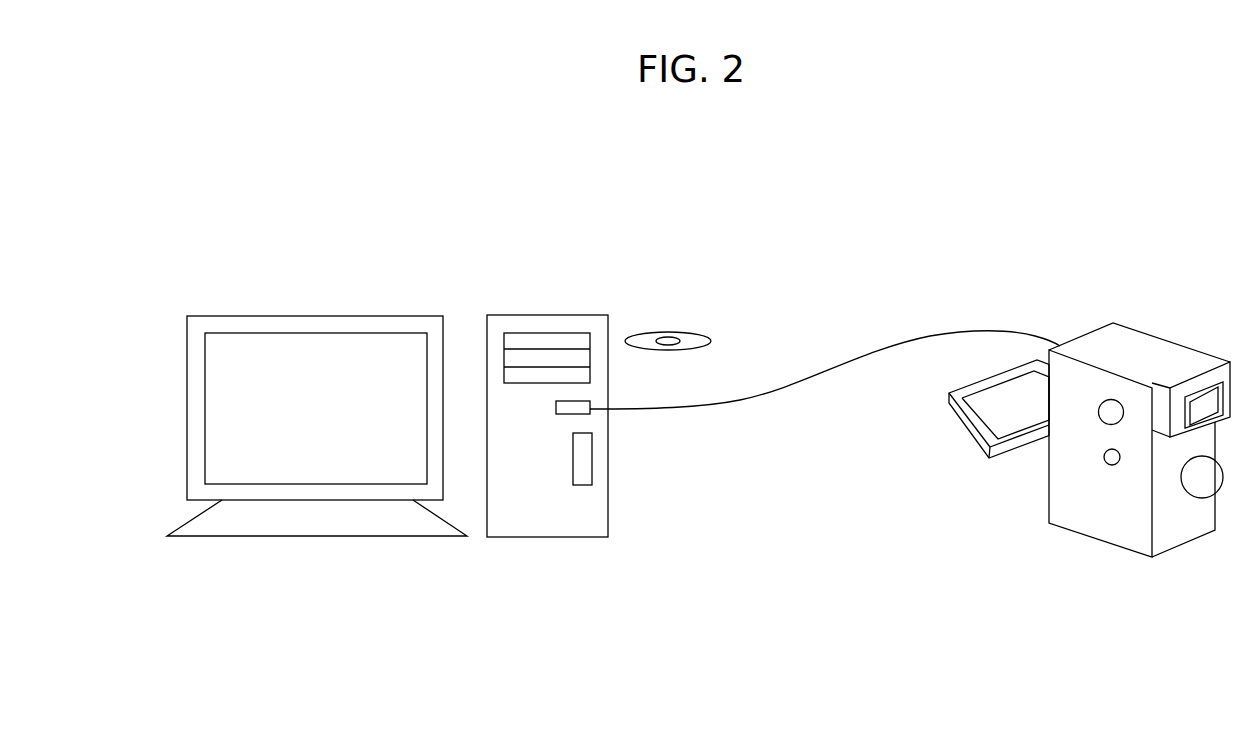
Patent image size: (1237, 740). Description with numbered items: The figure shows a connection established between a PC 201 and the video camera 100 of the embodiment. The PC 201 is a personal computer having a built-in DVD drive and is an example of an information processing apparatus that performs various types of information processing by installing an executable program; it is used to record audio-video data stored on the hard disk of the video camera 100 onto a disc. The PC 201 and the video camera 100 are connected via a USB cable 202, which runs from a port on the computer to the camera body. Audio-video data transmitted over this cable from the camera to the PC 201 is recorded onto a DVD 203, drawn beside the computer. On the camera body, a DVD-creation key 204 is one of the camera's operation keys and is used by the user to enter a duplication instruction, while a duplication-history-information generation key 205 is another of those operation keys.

The video camera 100 is at (1128, 550).
The PC 201 is at (547, 315).
The USB cable 202 is at (660, 412).
The DVD 203 is at (678, 332).
The DVD-creation key 204 is at (1111, 398).
The duplication-history-information generation key 205 is at (1112, 466).